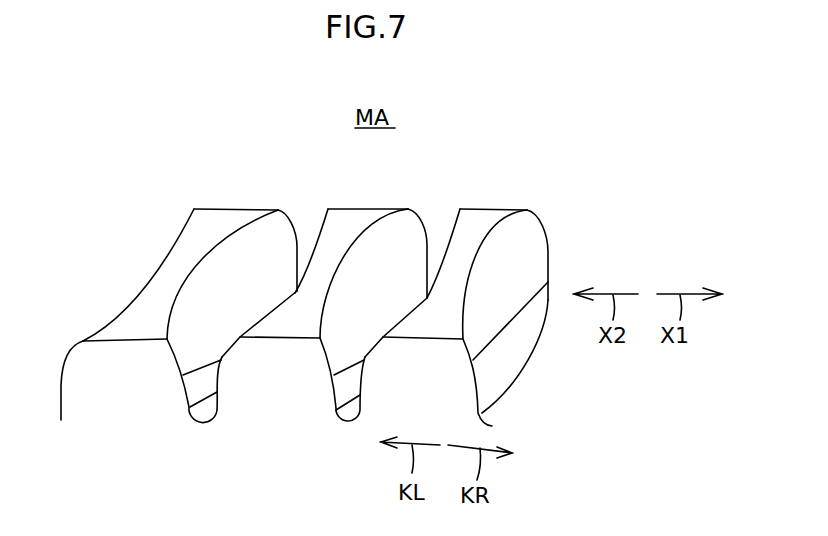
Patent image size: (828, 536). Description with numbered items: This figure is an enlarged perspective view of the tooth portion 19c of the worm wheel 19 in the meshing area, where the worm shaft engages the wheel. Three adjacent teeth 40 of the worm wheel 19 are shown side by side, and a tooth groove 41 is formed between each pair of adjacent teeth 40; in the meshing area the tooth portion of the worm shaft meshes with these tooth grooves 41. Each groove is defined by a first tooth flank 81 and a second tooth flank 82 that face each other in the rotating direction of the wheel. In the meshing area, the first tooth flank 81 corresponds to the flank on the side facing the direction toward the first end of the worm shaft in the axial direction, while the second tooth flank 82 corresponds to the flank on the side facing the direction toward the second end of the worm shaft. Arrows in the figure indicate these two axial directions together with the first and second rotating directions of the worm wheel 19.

The worm wheel 19 is at (222, 163).
The tooth portion of the worm wheel 19c is at (209, 205).
The teeth of the worm wheel 40 is at (237, 220).
The tooth grooves 41 is at (202, 421).
The first tooth flank 81 is at (318, 237).
The second tooth flank 82 is at (218, 307).